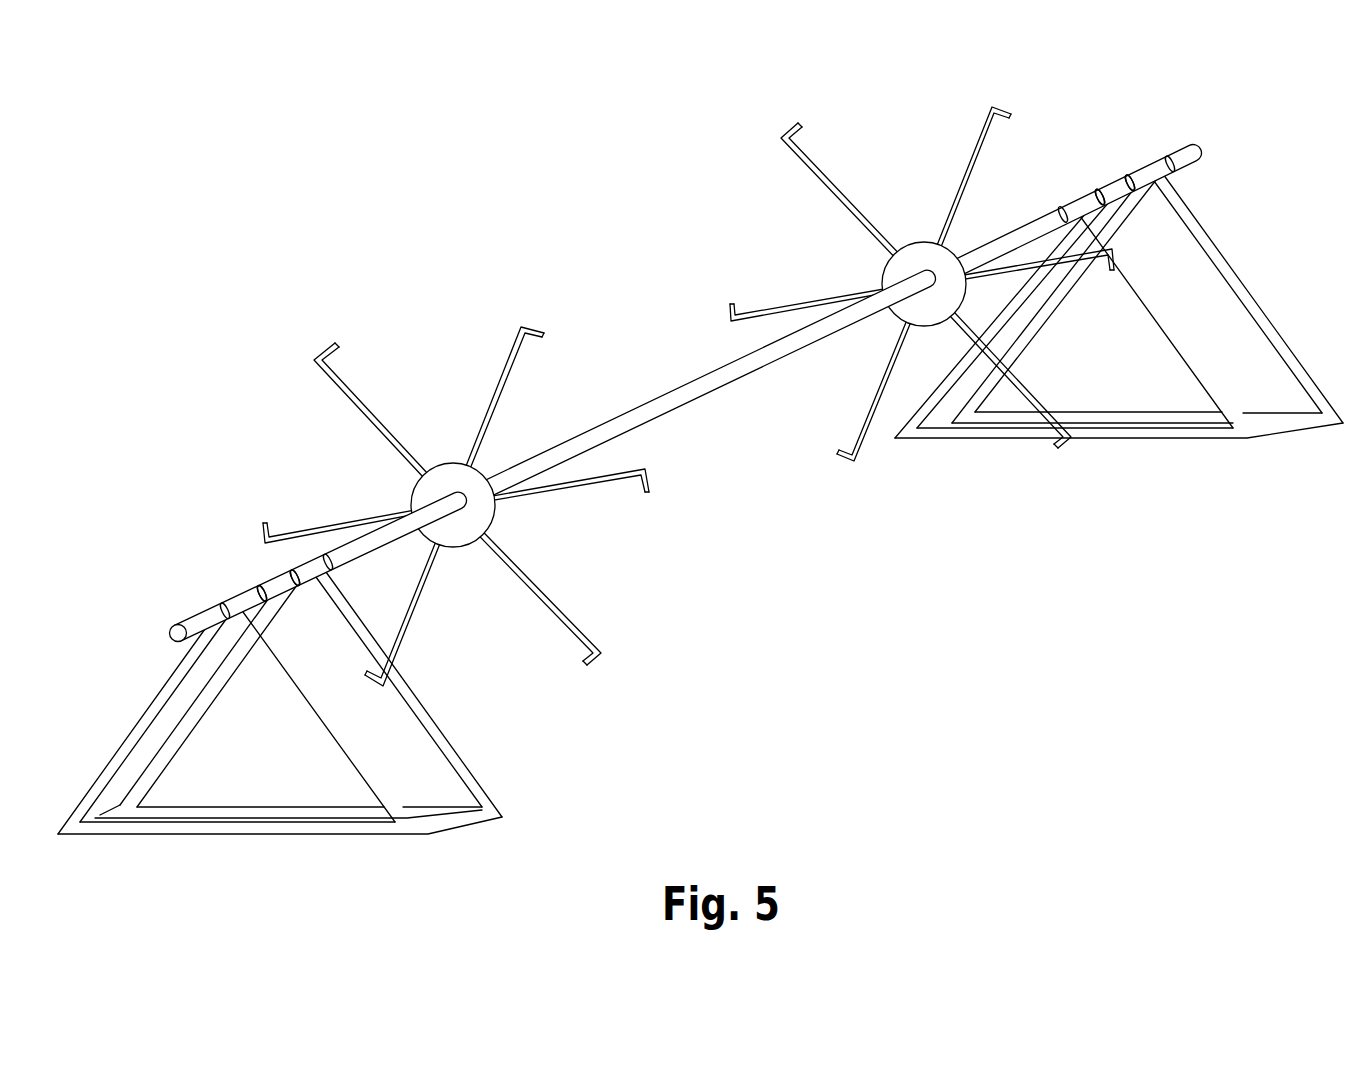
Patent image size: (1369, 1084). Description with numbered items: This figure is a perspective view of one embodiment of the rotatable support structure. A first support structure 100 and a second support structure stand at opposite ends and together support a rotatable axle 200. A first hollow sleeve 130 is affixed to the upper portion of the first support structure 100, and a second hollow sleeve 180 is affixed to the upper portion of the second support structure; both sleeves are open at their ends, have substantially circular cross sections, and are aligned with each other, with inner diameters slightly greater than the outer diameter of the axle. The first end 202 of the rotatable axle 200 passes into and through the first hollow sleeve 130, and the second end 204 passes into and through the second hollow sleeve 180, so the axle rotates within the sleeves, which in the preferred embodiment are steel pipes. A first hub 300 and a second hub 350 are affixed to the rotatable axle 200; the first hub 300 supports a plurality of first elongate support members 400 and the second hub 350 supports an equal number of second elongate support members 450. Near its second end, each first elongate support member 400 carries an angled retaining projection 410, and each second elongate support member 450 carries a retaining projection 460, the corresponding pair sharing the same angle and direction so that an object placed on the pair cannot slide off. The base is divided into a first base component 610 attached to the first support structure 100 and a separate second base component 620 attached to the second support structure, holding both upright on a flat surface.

The first support structure 100 is at (170, 697).
The first hollow sleeve 130 is at (247, 601).
The second hollow sleeve 180 is at (1070, 203).
The rotatable axle 200 is at (686, 393).
The first end 202 is at (272, 579).
The second end 204 is at (1107, 188).
The first hub 300 is at (443, 480).
The second hub 350 is at (918, 262).
The first elongate support members 400 is at (338, 380).
The retaining projection 410 is at (262, 530).
The second elongate support members 450 is at (980, 138).
The retaining projection 460 is at (790, 125).
The first base component 610 is at (267, 827).
The second base component 620 is at (1147, 437).